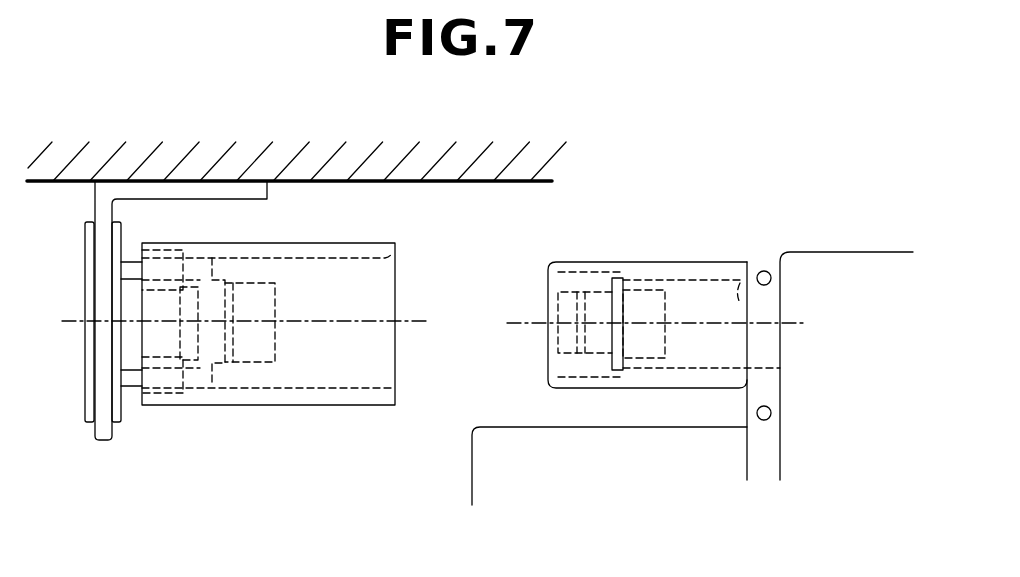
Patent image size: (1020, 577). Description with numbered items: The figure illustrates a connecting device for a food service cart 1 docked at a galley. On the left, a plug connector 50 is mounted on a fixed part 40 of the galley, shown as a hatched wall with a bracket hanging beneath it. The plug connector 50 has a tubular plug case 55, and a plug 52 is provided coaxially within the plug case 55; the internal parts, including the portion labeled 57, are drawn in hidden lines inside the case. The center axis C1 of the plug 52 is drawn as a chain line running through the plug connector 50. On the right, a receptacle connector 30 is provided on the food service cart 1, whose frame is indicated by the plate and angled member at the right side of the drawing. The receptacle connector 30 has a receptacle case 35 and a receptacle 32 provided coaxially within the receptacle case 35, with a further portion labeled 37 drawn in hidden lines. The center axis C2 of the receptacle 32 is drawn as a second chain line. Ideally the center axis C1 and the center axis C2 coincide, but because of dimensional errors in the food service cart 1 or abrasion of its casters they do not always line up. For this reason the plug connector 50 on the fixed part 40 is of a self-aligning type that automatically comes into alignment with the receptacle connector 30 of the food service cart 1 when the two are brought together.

The fixed part of the galley 40 is at (272, 112).
The plug connector 50 is at (212, 428).
The plug 52 is at (255, 407).
The plug case 55 is at (333, 405).
The sleeve 57 is at (358, 388).
The center axis of the plug C1 is at (368, 322).
The receptacle connector 30 is at (699, 211).
The receptacle 32 is at (598, 300).
The receptacle case 35 is at (637, 270).
The receptacle body 37 is at (702, 259).
The center axis of the receptacle C2 is at (530, 323).
The food service cart 1 is at (657, 502).